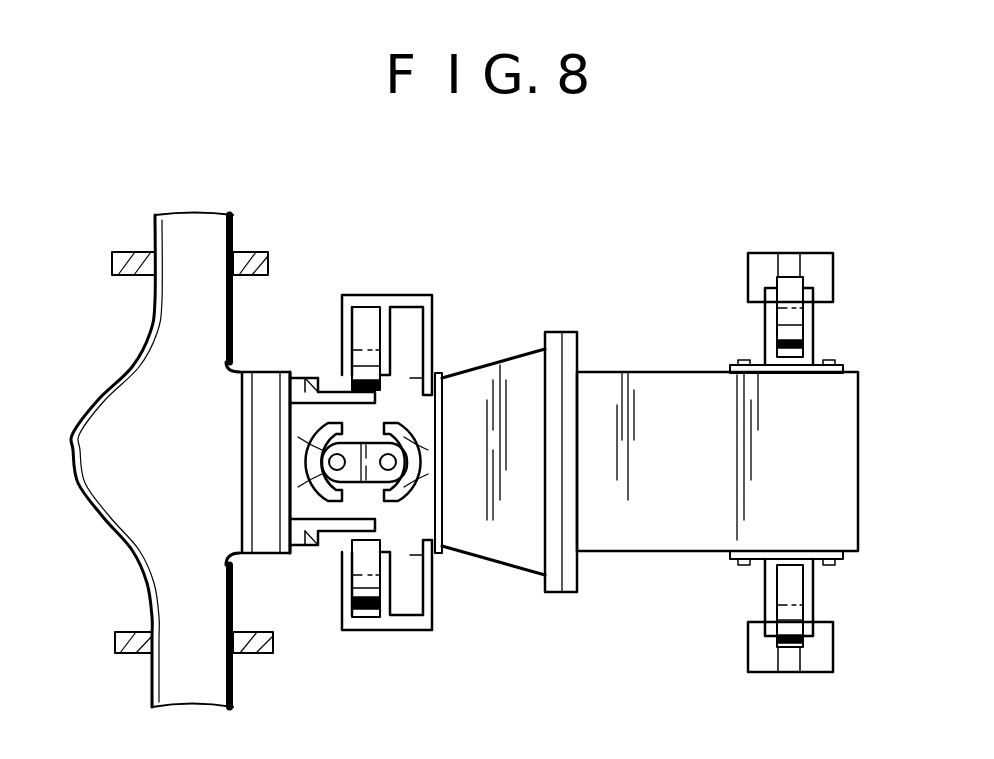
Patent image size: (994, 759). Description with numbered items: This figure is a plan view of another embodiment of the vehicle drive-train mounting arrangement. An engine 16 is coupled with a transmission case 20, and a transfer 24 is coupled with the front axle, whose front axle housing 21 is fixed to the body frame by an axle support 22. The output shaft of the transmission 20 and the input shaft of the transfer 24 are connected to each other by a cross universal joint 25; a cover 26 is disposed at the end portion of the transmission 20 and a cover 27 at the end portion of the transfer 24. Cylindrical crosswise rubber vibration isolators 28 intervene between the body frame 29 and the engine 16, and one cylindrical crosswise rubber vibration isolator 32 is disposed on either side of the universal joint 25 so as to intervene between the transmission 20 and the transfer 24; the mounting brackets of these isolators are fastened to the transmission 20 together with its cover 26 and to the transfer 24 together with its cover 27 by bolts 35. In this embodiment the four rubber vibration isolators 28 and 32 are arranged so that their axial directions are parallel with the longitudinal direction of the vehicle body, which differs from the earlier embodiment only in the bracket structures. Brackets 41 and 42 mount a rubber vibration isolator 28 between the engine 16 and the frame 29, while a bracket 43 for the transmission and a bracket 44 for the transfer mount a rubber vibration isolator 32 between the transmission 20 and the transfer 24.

The engine 16 is at (612, 372).
The transmission case 20 is at (520, 350).
The front axle housing 21 is at (150, 537).
The axle support 22 is at (133, 655).
The transfer 24 is at (262, 530).
The cross universal joint 25 is at (378, 475).
The cover 26 is at (440, 400).
The cover 27 is at (292, 376).
The rubber vibration isolator 28 is at (813, 316).
The body frame 29 is at (826, 253).
The rubber vibration isolator 32 is at (363, 340).
The bolts 35 is at (325, 382).
The bracket 41 is at (813, 338).
The bracket 42 is at (788, 258).
The bracket 43 is at (434, 297).
The bracket 44 is at (327, 380).